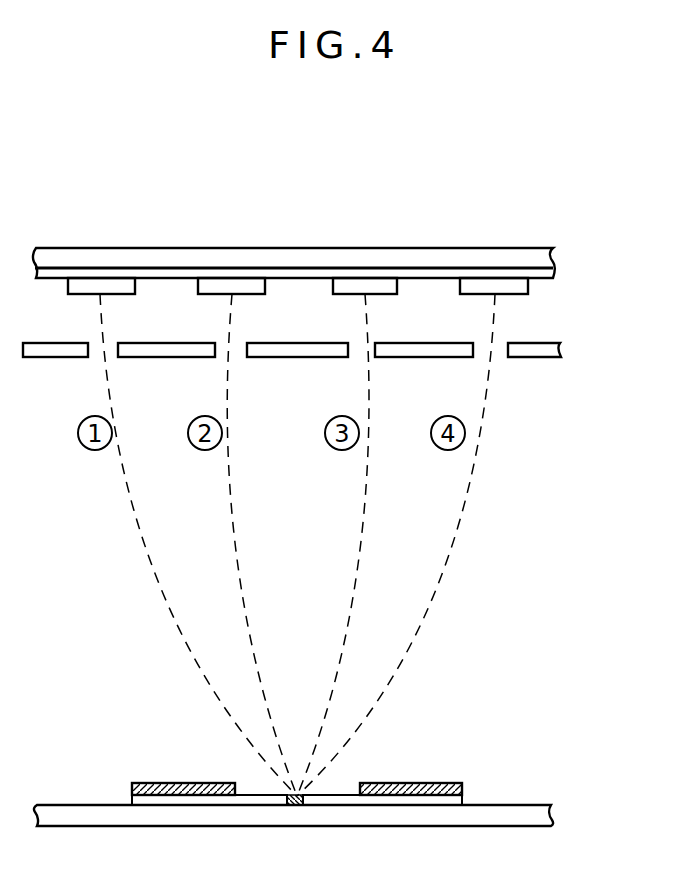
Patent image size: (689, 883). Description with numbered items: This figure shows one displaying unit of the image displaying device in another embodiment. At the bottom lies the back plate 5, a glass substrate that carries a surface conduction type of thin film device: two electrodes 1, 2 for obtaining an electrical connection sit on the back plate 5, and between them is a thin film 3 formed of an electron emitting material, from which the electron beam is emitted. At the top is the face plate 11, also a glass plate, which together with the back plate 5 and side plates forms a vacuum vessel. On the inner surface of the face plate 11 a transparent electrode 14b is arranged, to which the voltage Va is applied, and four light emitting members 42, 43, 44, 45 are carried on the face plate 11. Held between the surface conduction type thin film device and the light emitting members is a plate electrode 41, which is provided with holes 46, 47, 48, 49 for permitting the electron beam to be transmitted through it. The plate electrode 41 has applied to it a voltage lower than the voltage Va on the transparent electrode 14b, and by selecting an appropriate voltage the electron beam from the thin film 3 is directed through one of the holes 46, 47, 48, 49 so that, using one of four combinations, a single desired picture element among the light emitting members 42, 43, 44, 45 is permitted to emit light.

The face plate 11 is at (537, 243).
The transparent electrode 14b is at (547, 280).
The light emitting member 42 is at (78, 295).
The light emitting member 43 is at (210, 295).
The light emitting member 44 is at (345, 295).
The light emitting member 45 is at (472, 296).
The hole 46 is at (98, 354).
The hole 47 is at (222, 354).
The hole 48 is at (357, 354).
The hole 49 is at (479, 354).
The plate electrode 41 is at (528, 360).
The electrode 1 is at (177, 783).
The electrode 2 is at (423, 783).
The thin film 3 is at (348, 795).
The back plate 5 is at (100, 826).